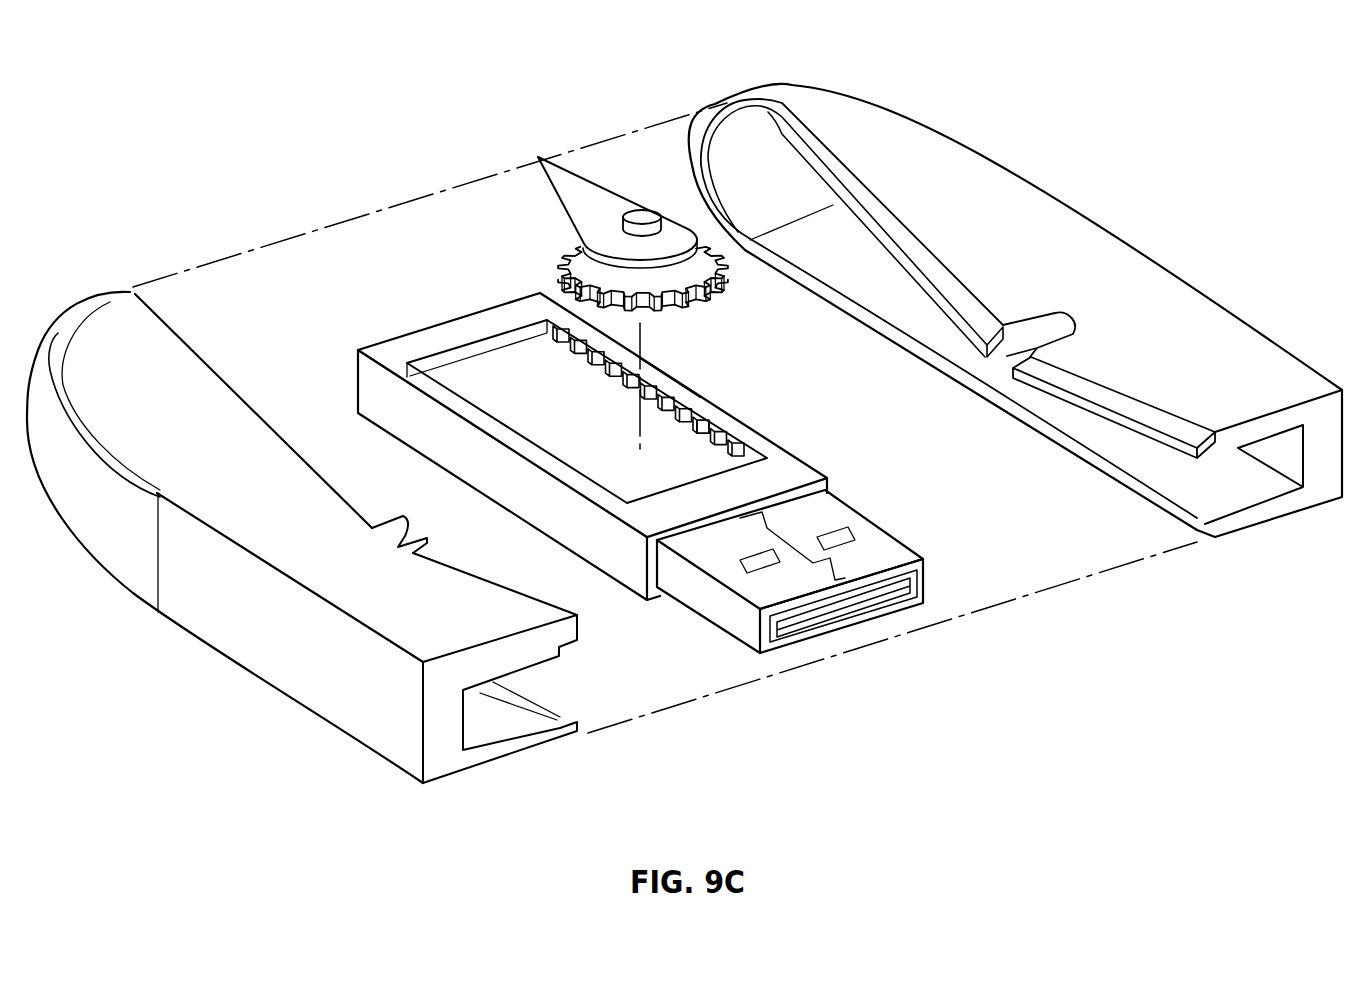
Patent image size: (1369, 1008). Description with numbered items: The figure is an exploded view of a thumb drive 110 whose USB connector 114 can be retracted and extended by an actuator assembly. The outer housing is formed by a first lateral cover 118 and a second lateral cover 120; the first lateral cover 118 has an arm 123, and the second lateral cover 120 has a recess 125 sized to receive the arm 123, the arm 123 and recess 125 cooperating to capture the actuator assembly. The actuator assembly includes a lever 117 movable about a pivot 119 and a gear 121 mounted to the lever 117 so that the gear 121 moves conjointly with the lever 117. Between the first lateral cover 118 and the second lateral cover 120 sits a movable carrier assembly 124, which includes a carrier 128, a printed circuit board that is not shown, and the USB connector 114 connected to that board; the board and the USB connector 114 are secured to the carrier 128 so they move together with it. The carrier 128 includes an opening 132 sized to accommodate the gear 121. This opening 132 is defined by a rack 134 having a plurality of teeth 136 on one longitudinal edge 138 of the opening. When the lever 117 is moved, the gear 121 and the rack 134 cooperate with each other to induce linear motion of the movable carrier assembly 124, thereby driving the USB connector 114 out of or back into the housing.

The thumb drive 110 is at (164, 88).
The USB connector 114 is at (767, 593).
The lever 117 is at (583, 187).
The first lateral cover 118 is at (410, 623).
The pivot 119 is at (647, 213).
The second lateral cover 120 is at (1182, 328).
The gear 121 is at (567, 322).
The arm 123 is at (397, 538).
The movable carrier assembly 124 is at (620, 543).
The recess 125 is at (1022, 340).
The carrier 128 is at (352, 392).
The opening 132 is at (383, 402).
The rack 134 is at (708, 422).
The teeth 136 is at (670, 385).
The longitudinal edge 138 is at (506, 389).